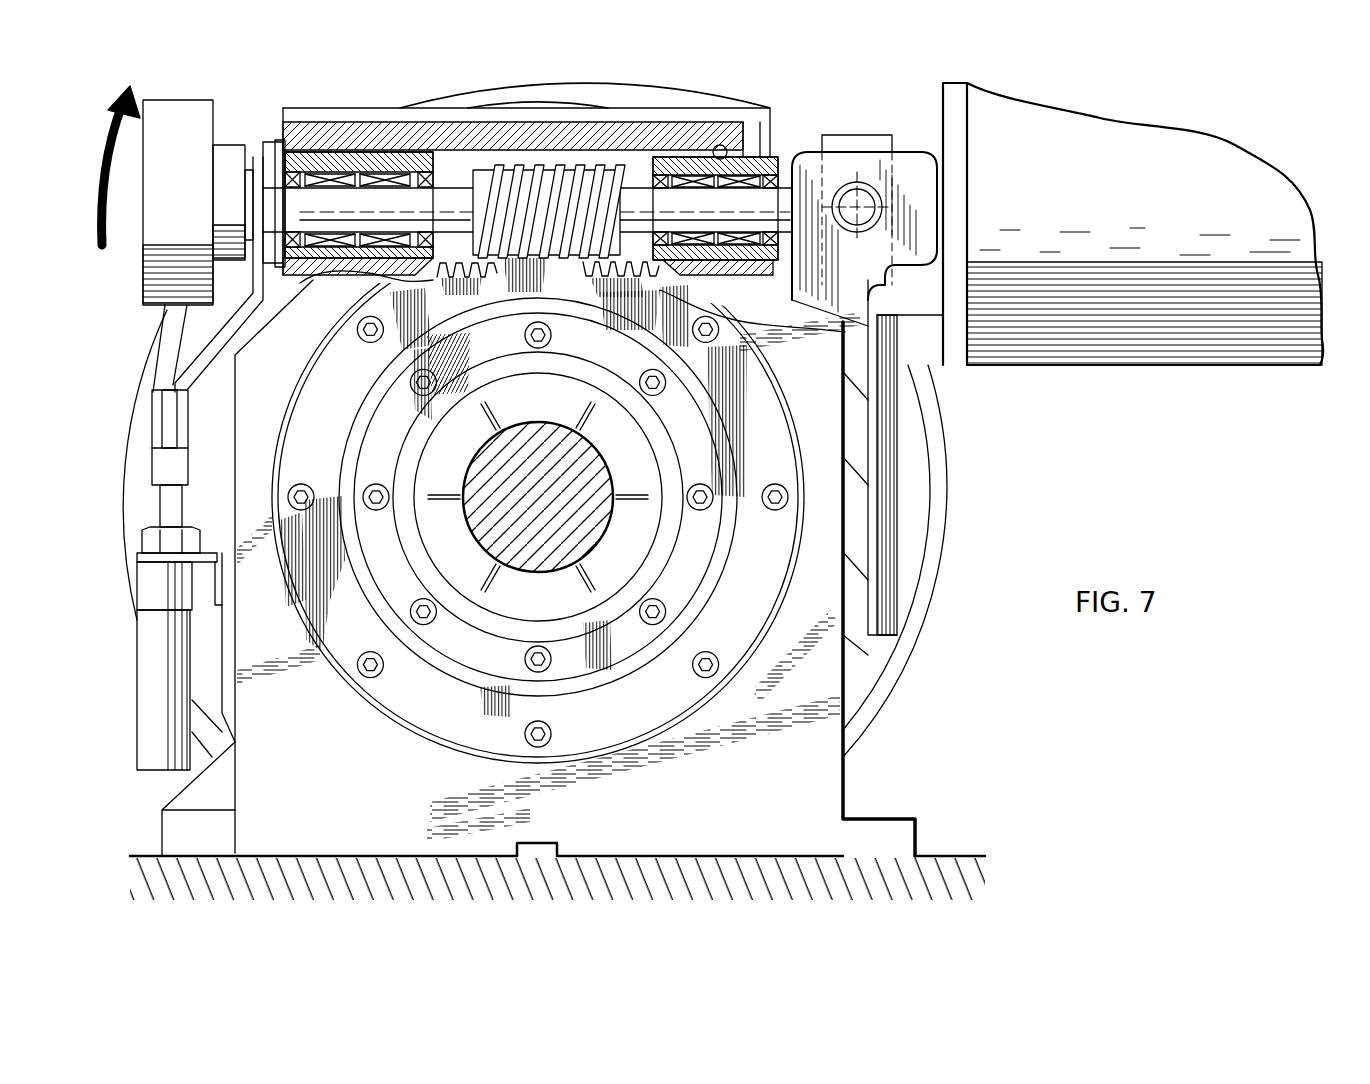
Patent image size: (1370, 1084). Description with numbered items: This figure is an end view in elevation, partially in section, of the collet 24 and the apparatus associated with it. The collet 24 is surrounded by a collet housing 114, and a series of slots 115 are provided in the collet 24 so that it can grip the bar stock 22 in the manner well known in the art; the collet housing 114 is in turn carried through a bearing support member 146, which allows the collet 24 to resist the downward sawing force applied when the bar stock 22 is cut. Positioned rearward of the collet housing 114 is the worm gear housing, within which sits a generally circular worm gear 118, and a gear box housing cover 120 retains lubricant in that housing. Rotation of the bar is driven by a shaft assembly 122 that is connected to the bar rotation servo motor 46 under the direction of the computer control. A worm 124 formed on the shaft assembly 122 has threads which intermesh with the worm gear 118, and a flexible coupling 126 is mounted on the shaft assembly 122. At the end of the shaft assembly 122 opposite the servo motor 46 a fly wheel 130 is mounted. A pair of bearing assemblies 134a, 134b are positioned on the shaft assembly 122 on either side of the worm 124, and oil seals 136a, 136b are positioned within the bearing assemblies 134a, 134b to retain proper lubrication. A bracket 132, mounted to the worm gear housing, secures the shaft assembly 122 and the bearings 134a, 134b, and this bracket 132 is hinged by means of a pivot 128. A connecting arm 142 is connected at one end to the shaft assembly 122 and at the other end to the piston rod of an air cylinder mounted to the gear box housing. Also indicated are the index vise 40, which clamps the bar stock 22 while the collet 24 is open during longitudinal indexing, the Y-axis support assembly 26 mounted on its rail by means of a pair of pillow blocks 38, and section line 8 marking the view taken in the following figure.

The section line 8- 8 is at (537, 63).
The bar stock 22 is at (595, 467).
The collet 24 is at (515, 600).
The Y-axis support assembly 26 is at (978, 868).
The pillow blocks 38 is at (155, 682).
The index vise 40 is at (172, 468).
The bar rotation servo motor 46 is at (1285, 188).
The collet housing 114 is at (587, 615).
The slots 115 is at (450, 577).
The worm gear 118 is at (615, 300).
The gear box housing cover 120 is at (355, 830).
The shaft assembly 122 is at (455, 175).
The worm 124 is at (660, 135).
The flexible coupling 126 is at (838, 140).
The pivot 128 is at (870, 205).
The fly wheel 130 is at (200, 130).
The bracket 132 is at (352, 122).
The bearing assembly 134a is at (730, 160).
The bearing assembly 134b is at (325, 155).
The oil seal 136a is at (738, 278).
The oil seal 136b is at (296, 275).
The connecting arm 142 is at (205, 345).
The bearing support member 146 is at (754, 607).